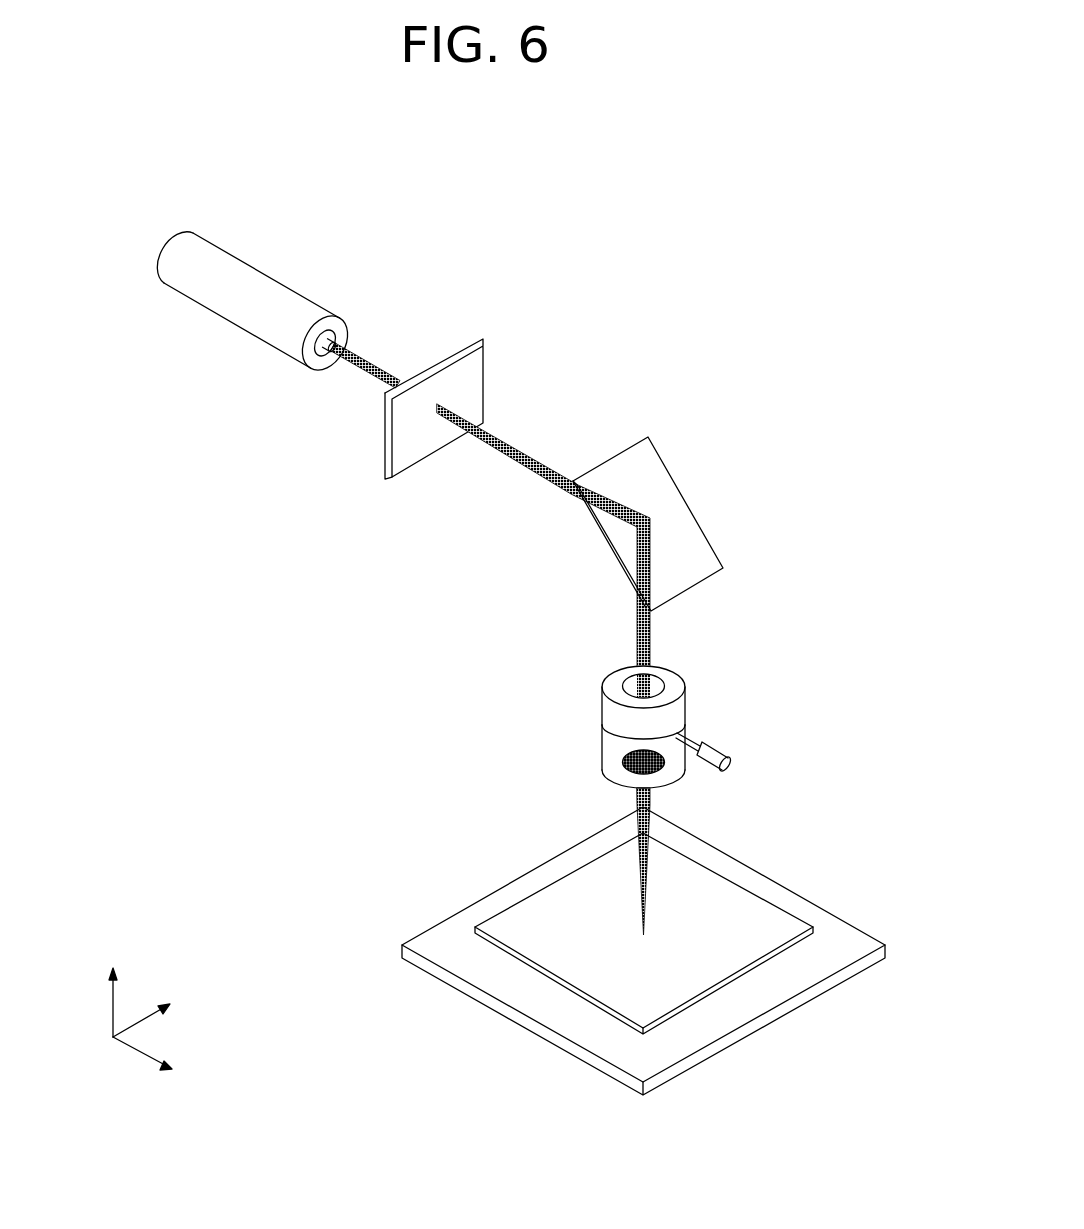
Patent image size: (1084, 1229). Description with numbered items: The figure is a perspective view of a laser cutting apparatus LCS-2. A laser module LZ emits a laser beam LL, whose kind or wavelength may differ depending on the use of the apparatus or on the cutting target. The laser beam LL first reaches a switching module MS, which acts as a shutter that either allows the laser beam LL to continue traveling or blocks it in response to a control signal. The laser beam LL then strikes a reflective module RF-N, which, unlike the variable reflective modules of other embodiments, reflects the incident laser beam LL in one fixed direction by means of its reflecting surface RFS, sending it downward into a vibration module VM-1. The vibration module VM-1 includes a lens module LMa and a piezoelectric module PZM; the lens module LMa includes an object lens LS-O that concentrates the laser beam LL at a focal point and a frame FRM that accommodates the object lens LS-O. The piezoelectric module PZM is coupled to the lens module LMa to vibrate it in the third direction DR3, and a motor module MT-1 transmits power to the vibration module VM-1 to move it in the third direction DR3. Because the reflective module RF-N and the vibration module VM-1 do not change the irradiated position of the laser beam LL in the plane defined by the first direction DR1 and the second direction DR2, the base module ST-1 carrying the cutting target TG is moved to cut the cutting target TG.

The laser cutting apparatus LCS-2 is at (642, 189).
The laser module LZ is at (263, 287).
The laser beam LL is at (366, 366).
The switching module MS is at (483, 340).
The reflecting surface RFS is at (630, 476).
The reflective module RF-N is at (670, 472).
The vibration module VM-1 is at (430, 700).
The piezoelectric module PZM is at (608, 710).
The lens module LMa is at (495, 735).
The frame FRM is at (608, 745).
The object lens LS-O is at (630, 774).
The motor module MT-1 is at (712, 748).
The base module ST-1 is at (818, 988).
The cutting target TG is at (722, 985).
The first direction DR1 is at (165, 1060).
The second direction DR2 is at (165, 1014).
The third direction DR3 is at (113, 990).